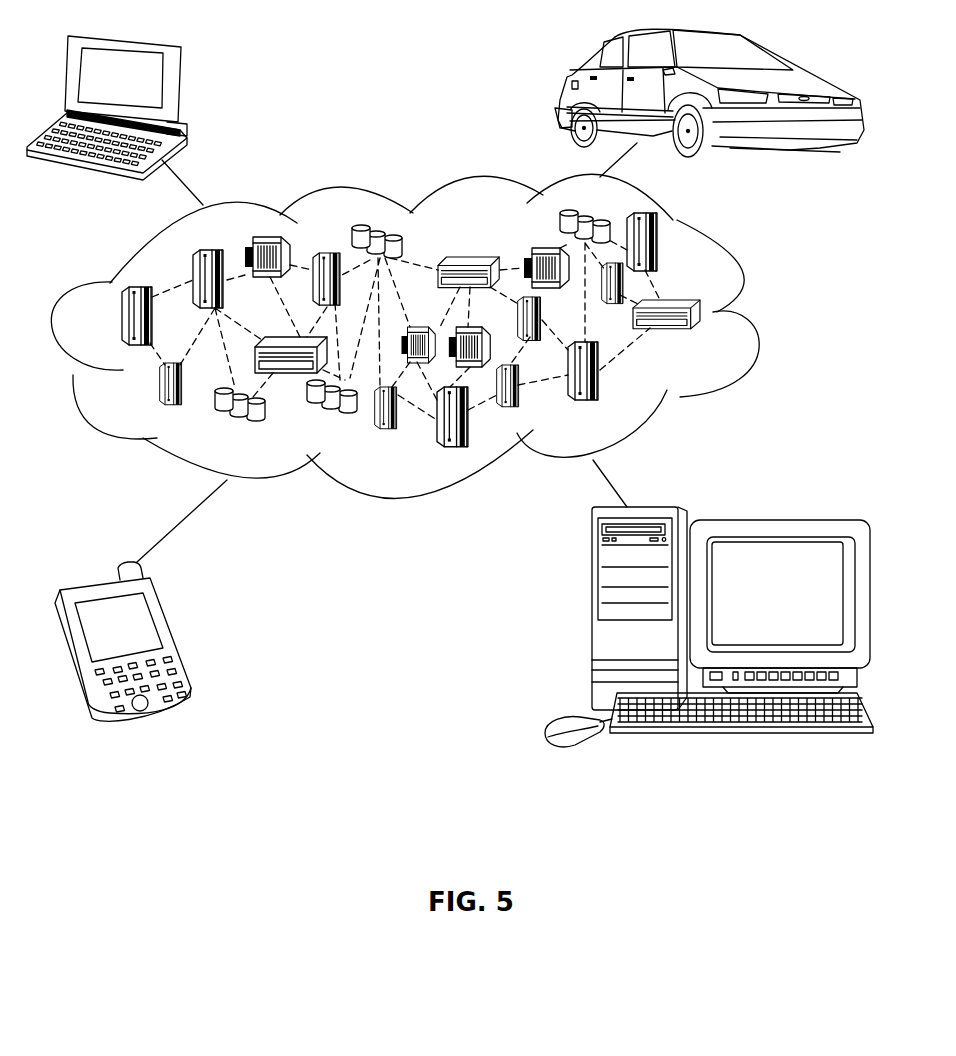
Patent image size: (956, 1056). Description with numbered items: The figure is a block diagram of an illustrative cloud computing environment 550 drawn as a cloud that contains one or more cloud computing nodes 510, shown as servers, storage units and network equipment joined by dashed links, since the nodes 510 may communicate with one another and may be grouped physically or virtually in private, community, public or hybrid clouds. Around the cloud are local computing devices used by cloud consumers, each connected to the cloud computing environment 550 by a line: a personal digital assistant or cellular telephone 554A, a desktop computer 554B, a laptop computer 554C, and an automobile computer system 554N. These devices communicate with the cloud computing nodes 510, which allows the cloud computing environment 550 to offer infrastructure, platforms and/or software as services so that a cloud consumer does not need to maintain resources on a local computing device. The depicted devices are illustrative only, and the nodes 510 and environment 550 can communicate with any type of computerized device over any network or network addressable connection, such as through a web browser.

The cloud computing nodes 510 is at (720, 333).
The cloud computing environment 550 is at (743, 278).
The personal digital assistant (PDA) or cellular telephone 554A is at (173, 637).
The desktop computer 554B is at (592, 615).
The laptop computer 554C is at (179, 80).
The automobile computer system 554N is at (563, 85).